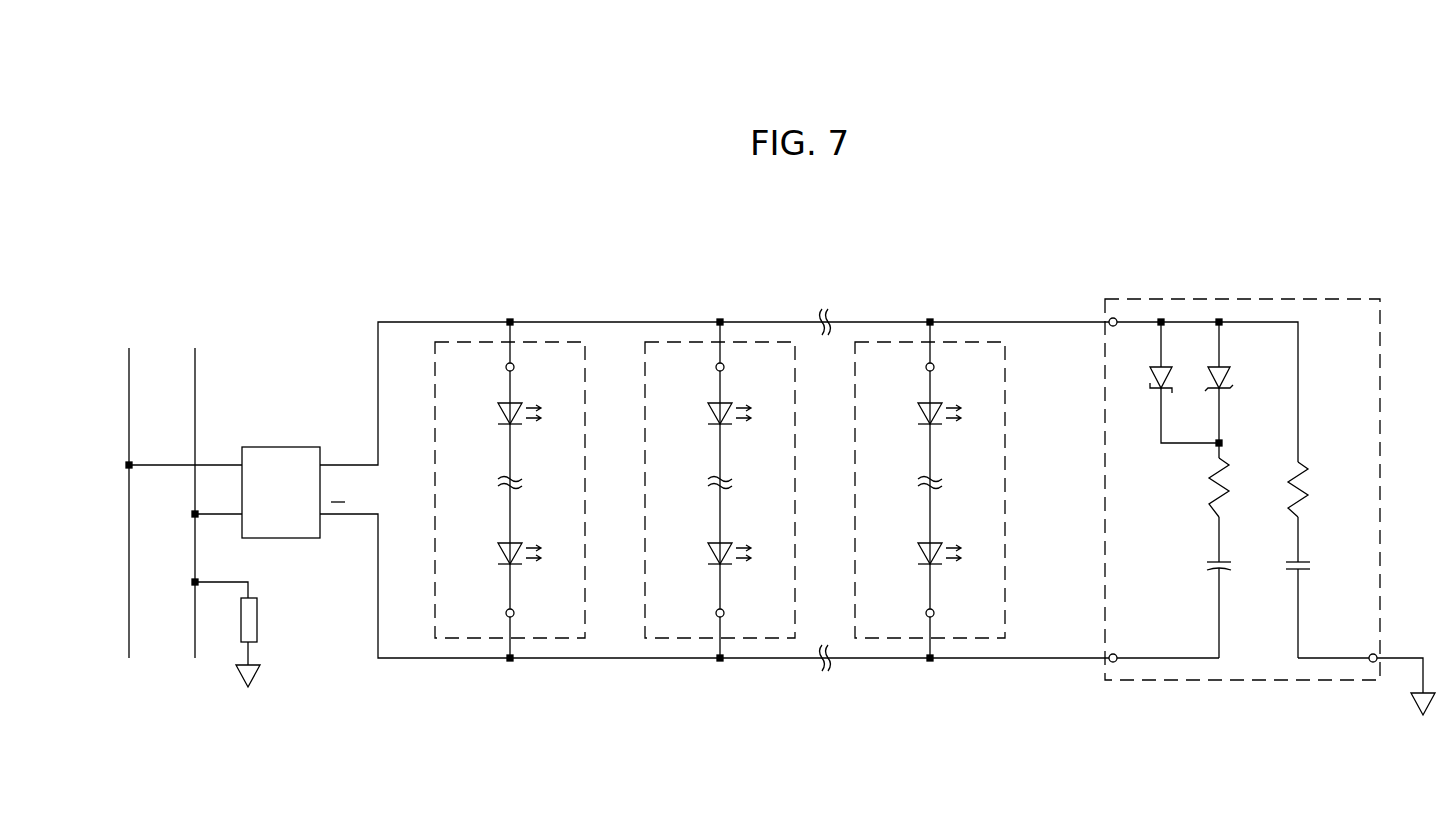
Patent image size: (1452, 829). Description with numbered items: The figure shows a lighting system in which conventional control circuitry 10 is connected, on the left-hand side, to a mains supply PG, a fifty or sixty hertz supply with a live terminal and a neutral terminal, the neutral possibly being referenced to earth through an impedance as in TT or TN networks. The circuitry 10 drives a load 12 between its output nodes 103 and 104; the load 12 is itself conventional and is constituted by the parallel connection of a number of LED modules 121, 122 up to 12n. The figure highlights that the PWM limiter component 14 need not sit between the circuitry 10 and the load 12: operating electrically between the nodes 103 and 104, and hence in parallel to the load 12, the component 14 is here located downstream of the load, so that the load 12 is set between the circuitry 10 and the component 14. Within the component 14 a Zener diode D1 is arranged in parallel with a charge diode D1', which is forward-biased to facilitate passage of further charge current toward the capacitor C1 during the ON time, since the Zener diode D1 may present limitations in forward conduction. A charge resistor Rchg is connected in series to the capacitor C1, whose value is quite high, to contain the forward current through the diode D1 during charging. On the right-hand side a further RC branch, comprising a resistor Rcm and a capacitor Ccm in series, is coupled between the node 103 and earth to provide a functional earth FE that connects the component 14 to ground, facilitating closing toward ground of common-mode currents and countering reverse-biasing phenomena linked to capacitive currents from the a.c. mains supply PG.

The mains supply PG is at (110, 338).
The control circuitry 10 is at (288, 404).
The first node 103 is at (402, 320).
The second node 104 is at (403, 660).
The load 12 is at (720, 492).
The LED module 121 is at (530, 676).
The LED module 122 is at (730, 676).
The LED module 12n is at (928, 676).
The PWM limiter circuit 14 is at (1242, 432).
The charge diode D1' is at (1168, 382).
The Zener diode D1 is at (1239, 390).
The current-limiter resistor Rchg is at (1212, 484).
The capacitance C1 is at (1218, 574).
The resistor Rcm is at (1338, 474).
The capacitor Ccm is at (1306, 560).
The functional earth FE is at (1370, 664).